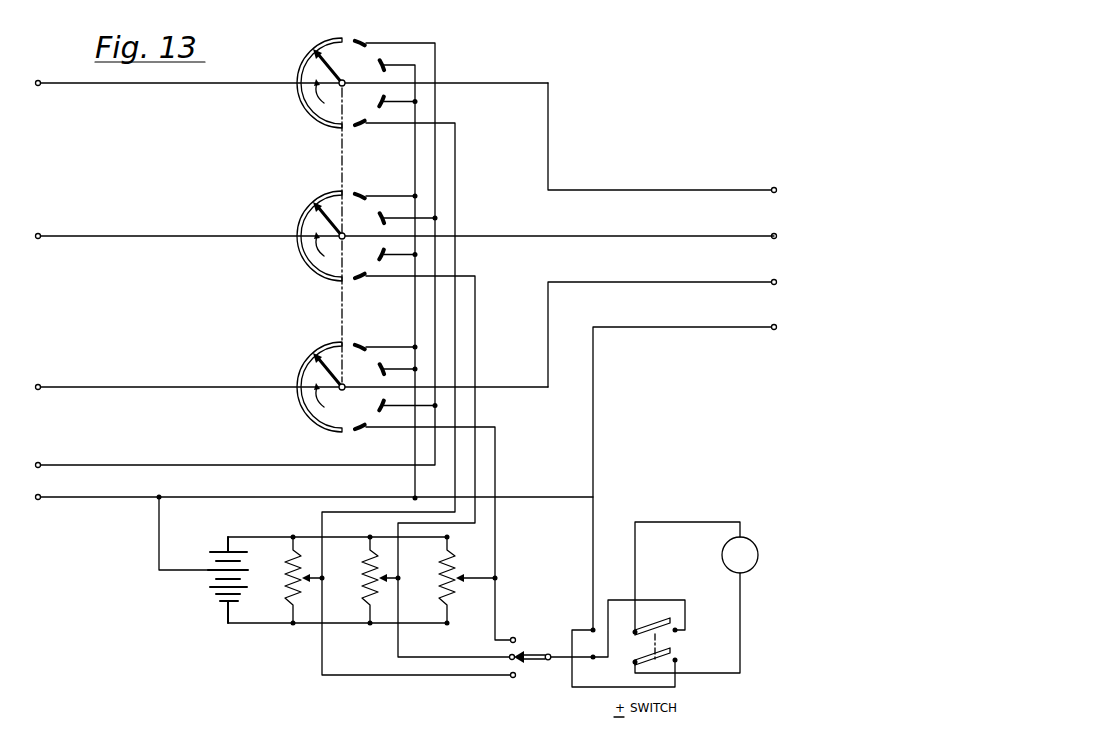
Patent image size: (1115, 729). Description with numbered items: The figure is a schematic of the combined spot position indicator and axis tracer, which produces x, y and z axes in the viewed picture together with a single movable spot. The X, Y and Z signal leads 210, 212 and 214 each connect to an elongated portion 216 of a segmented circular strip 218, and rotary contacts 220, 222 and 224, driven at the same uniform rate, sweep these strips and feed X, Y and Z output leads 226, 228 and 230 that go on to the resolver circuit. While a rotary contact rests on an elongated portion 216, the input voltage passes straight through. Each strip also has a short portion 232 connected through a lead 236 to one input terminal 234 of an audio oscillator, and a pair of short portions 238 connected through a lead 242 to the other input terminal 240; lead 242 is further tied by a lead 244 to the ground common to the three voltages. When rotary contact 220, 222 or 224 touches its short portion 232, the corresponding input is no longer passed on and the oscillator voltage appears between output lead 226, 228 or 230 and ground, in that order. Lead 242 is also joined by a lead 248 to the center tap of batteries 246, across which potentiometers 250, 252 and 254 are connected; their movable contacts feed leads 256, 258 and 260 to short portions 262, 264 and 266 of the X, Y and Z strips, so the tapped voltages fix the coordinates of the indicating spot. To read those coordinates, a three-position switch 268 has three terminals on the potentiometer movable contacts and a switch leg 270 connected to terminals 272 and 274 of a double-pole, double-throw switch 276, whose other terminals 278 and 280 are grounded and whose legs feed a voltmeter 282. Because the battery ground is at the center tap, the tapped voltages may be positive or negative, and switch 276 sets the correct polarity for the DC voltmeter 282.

The X signal lead 210 is at (200, 84).
The Y signal lead 212 is at (215, 235).
The Z signal lead 214 is at (198, 386).
The elongated portion 216 is at (306, 116).
The segmented circular strip 218 is at (297, 229).
The rotary contact 220 is at (324, 70).
The rotary contact 222 is at (318, 224).
The rotary contact 224 is at (318, 375).
The X output lead 226 is at (728, 182).
The Y output lead 228 is at (712, 226).
The Z output lead 230 is at (716, 281).
The short portion 232 is at (366, 44).
The input terminal 234 is at (41, 463).
The lead 236 is at (290, 455).
The short portions 238 is at (384, 98).
The input terminal 240 is at (40, 499).
The lead 242 is at (258, 498).
The lead 244 is at (655, 328).
The batteries 246 is at (213, 588).
The lead 248 is at (158, 548).
The potentiometer 250 is at (290, 596).
The potentiometer 252 is at (367, 596).
The potentiometer 254 is at (445, 596).
The lead 256 is at (320, 519).
The lead 258 is at (396, 524).
The lead 260 is at (496, 548).
The short portion 262 is at (358, 128).
The short portion 264 is at (358, 280).
The short portion 266 is at (356, 432).
The 3-position switch 268 is at (516, 640).
The switch leg 270 is at (528, 675).
The terminal 272 is at (592, 660).
The terminal 274 is at (680, 632).
The double-pole, double-throw switch 276 is at (627, 623).
The terminal 278 is at (592, 628).
The terminal 280 is at (680, 660).
The voltmeter 282 is at (750, 570).